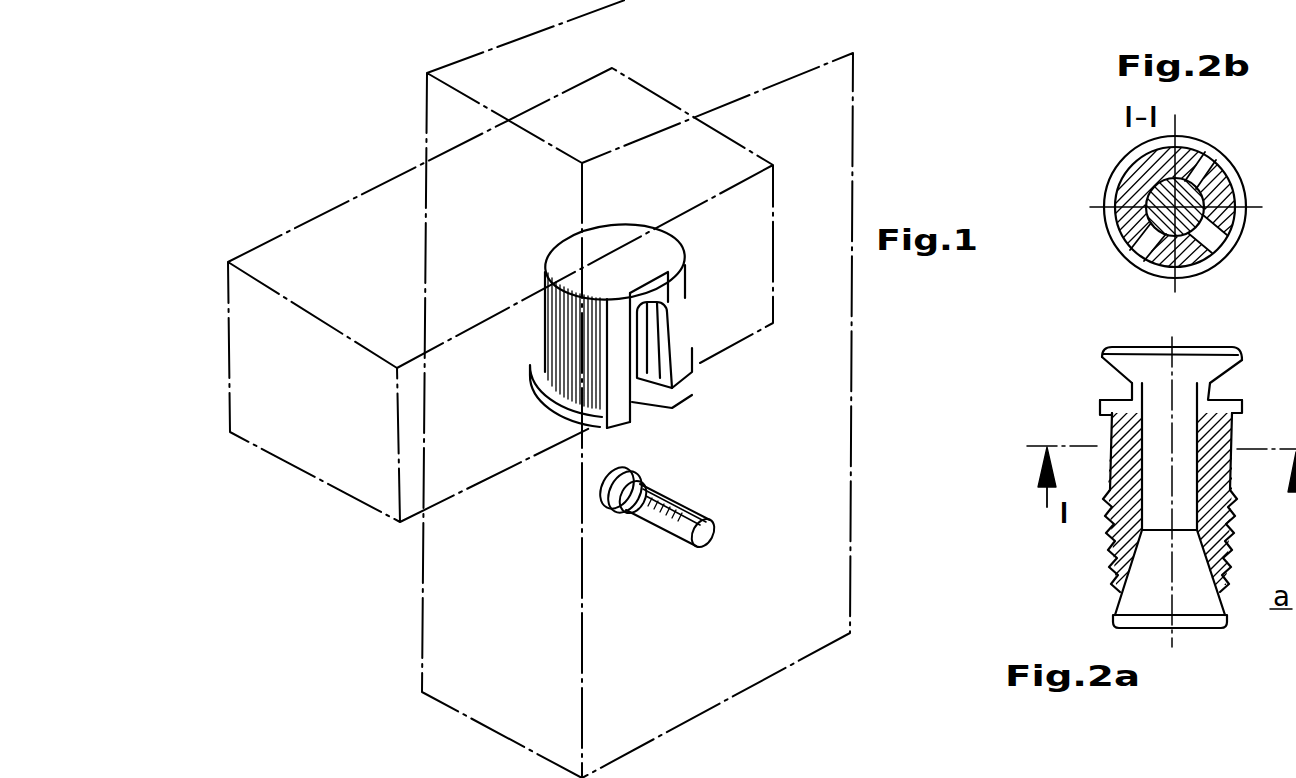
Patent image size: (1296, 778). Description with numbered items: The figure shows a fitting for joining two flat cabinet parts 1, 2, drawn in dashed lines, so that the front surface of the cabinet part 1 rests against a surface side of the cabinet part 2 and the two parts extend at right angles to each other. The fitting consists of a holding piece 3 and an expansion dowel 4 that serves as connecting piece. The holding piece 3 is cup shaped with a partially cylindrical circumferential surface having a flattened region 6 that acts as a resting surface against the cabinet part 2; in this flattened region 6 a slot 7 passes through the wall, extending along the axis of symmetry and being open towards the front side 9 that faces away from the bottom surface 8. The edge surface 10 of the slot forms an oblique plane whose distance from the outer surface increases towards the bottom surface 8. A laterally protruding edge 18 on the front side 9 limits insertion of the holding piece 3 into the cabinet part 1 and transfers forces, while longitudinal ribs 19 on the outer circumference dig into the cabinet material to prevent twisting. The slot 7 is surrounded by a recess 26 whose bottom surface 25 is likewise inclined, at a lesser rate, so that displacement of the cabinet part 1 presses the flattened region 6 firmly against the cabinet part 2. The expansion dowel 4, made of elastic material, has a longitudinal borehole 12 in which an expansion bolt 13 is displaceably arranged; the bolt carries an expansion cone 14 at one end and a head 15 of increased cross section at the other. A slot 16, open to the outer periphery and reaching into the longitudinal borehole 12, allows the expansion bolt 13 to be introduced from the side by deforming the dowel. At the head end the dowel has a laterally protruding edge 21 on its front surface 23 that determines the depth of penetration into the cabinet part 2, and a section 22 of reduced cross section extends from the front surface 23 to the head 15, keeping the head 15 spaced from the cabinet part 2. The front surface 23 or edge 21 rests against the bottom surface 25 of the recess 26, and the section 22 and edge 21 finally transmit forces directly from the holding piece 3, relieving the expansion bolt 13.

In FIG. 1, the cabinet part 1 is at (253, 392).
In FIG. 1, the cabinet part 2 is at (831, 114).
In FIG. 1, the holding piece 3 is at (688, 391).
In FIG. 1, the expansion dowel 4 is at (680, 503).
In FIG. 2B, the expansion dowel 4 is at (1218, 190).
In FIG. 2A, the expansion dowel 4 is at (1127, 510).
In FIG. 1, the flattened region 6 is at (663, 290).
In FIG. 1, the slot 7 is at (640, 392).
In FIG. 1, the bottom surface 8 is at (614, 237).
In FIG. 1, the front side 9 is at (615, 418).
In FIG. 1, the edge surface 10 is at (622, 293).
In FIG. 2A, the longitudinal borehole 12 is at (1200, 457).
In FIG. 2B, the expansion bolt 13 is at (1178, 185).
In FIG. 2A, the expansion bolt 13 is at (1178, 412).
In FIG. 1, the expansion cone 14 is at (703, 535).
In FIG. 2A, the expansion cone 14 is at (1203, 593).
In FIG. 1, the head 15 is at (618, 472).
In FIG. 2A, the head 15 is at (1217, 353).
In FIG. 1, the slot 16 is at (663, 490).
In FIG. 2B, the slot 16 is at (1217, 242).
In FIG. 1, the laterally protruding edge 18 is at (563, 413).
In FIG. 1, the longitudinal ribs 19 is at (543, 342).
In FIG. 2A, the laterally protruding edge 21 is at (1100, 406).
In FIG. 2A, the section of reduced cross section 22 is at (1107, 382).
In FIG. 2A, the front surface 23 is at (1113, 400).
In FIG. 1, the bottom surface 25 is at (653, 320).
In FIG. 1, the recess 26 is at (670, 353).